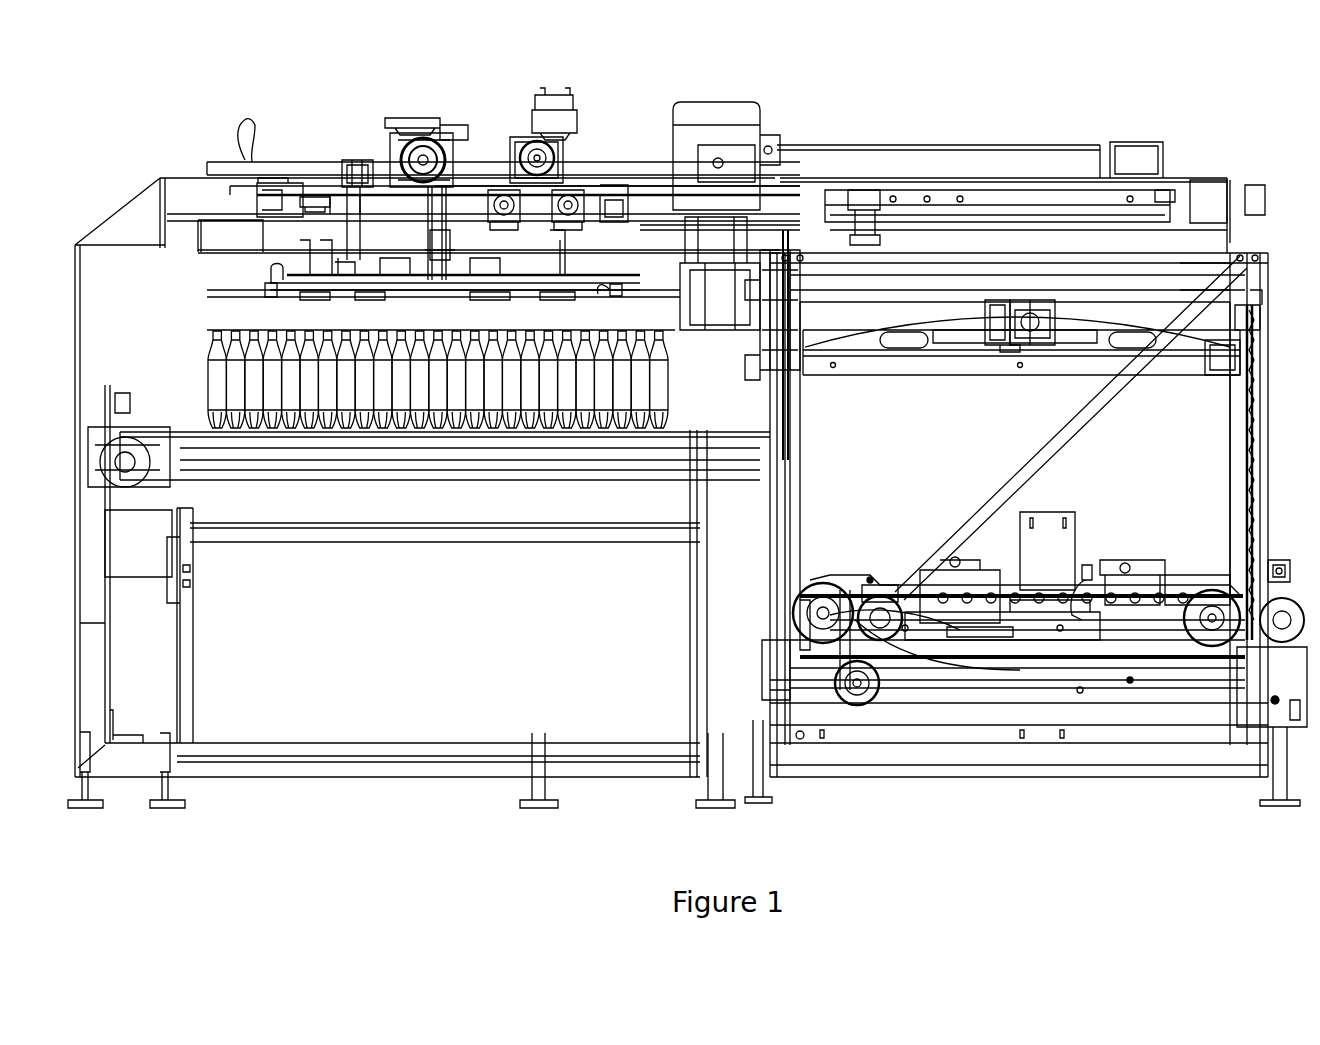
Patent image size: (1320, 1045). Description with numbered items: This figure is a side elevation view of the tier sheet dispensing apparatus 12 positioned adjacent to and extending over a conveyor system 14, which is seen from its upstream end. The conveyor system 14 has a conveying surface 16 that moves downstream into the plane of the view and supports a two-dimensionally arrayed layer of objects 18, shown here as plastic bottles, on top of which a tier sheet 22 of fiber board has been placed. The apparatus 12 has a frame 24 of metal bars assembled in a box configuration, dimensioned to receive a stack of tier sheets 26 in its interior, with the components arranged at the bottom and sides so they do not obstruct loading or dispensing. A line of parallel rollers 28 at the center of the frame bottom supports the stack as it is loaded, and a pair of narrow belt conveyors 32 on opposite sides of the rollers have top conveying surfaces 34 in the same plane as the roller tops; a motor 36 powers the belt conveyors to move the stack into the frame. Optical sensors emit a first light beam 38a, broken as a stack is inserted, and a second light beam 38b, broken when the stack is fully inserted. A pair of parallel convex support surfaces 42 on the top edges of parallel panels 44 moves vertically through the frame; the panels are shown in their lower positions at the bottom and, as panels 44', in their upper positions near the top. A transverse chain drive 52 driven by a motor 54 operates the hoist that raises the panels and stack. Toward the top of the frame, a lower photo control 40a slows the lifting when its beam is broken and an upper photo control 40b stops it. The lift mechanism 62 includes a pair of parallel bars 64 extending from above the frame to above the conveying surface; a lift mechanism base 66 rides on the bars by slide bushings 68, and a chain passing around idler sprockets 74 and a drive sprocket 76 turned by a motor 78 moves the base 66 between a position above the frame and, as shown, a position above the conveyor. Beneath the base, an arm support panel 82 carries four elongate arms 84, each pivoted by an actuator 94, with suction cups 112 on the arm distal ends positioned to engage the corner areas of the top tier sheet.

The tier sheet dispensing apparatus 12 is at (1154, 112).
The conveyor system 14 is at (187, 382).
The conveying surface 16 is at (280, 412).
The objects 18 is at (203, 367).
The tier sheet 22 is at (217, 293).
The frame 24 is at (1186, 260).
The stack of tier sheets 26 is at (1258, 416).
The rollers 28 is at (994, 590).
The belt conveyors 32 is at (1178, 582).
The top conveying surfaces 34 is at (878, 590).
The motor 36 is at (932, 612).
The first light beam 38a is at (1279, 565).
The second light beam 38b is at (864, 198).
The lower photo control 40a is at (994, 312).
The upper photo control 40b is at (1041, 308).
The support surfaces 42 is at (916, 320).
The panels 44 is at (1047, 695).
The panels in upper positions 44' is at (1021, 371).
The transverse chain drive 52 is at (786, 300).
The motor 54 is at (726, 132).
The lift mechanism 62 is at (578, 92).
The parallel bars 64 is at (648, 210).
The lift mechanism base 66 is at (318, 186).
The slide bushings 68 is at (268, 190).
The idler sprockets 74 is at (500, 191).
The drive sprocket 76 is at (528, 158).
The motor 78 is at (543, 100).
The arm support panel 82 is at (362, 160).
The elongate arms 84 is at (332, 255).
The actuator 94 is at (385, 284).
The suction cups 112 is at (265, 291).